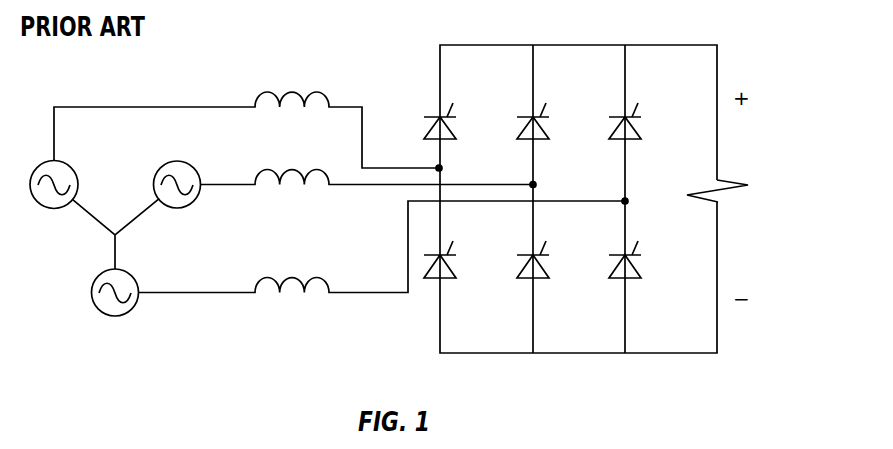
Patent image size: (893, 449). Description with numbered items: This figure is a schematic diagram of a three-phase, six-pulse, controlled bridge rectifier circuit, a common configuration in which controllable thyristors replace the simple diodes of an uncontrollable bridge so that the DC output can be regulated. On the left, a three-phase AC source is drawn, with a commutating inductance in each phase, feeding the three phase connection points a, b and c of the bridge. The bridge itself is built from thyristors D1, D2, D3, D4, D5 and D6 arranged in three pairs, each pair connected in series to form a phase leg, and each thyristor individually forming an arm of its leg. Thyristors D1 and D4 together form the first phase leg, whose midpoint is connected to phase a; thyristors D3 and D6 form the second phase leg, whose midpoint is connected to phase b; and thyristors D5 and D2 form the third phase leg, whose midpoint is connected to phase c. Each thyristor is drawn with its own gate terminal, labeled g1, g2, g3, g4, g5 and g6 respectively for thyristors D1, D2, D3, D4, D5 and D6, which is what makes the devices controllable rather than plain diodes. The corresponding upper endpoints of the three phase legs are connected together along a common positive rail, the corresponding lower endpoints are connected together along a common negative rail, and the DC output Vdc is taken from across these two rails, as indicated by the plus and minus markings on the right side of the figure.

The thyristor D1 is at (455, 134).
The thyristor D2 is at (640, 273).
The thyristor D3 is at (548, 134).
The thyristor D4 is at (455, 273).
The thyristor D5 is at (640, 134).
The thyristor D6 is at (548, 273).
The gate of thyristor D1 g1 is at (453, 103).
The gate of thyristor D2 g2 is at (638, 241).
The gate of thyristor D3 g3 is at (546, 103).
The gate of thyristor D4 g4 is at (453, 241).
The gate of thyristor D5 g5 is at (638, 103).
The gate of thyristor D6 g6 is at (546, 241).
The AC input node a is at (448, 167).
The AC input node b is at (542, 183).
The AC input node c is at (635, 199).
The DC output Vdc is at (742, 191).